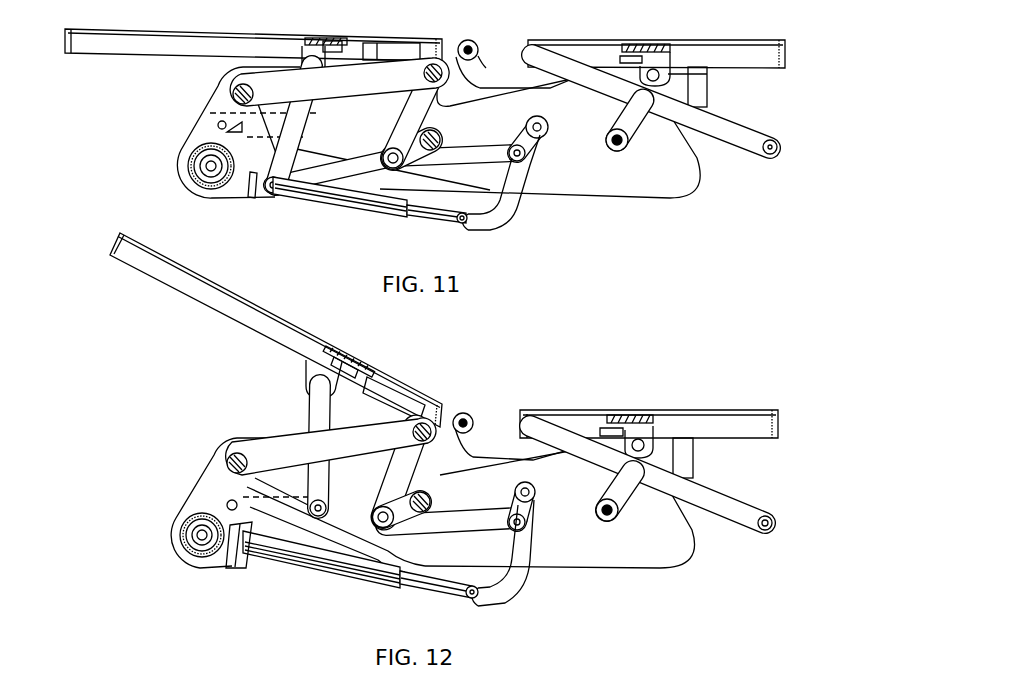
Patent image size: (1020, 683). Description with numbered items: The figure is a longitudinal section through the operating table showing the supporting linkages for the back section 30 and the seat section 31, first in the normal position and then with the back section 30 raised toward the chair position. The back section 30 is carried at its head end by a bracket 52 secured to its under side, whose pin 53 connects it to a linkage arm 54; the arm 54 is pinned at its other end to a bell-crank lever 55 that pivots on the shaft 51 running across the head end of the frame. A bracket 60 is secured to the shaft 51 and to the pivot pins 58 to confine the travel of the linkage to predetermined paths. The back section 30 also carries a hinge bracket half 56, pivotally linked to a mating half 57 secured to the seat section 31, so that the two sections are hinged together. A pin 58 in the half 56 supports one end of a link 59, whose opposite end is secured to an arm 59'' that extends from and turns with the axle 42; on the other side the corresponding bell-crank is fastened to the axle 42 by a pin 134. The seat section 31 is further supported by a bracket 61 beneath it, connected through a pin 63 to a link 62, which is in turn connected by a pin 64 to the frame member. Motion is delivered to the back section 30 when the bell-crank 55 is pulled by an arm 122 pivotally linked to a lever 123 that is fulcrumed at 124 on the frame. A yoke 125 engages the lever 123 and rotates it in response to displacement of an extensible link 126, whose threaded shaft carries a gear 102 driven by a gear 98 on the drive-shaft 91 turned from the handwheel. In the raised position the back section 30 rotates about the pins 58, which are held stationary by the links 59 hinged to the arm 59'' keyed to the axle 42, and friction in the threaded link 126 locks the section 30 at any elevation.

In FIG. 11, the back section 30 is at (165, 37).
In FIG. 12, the back section 30 is at (218, 291).
In FIG. 11, the seat section 31 is at (733, 52).
In FIG. 12, the seat section 31 is at (602, 413).
In FIG. 11, the shaft 42 is at (441, 140).
In FIG. 12, the shaft 42 is at (432, 502).
In FIG. 11, the shaft 51 is at (232, 94).
In FIG. 12, the shaft 51 is at (226, 461).
In FIG. 11, the bracket 52 is at (302, 44).
In FIG. 12, the bracket 52 is at (305, 379).
In FIG. 11, the pin 53 is at (318, 41).
In FIG. 11, the linkage arm 54 is at (308, 109).
In FIG. 12, the linkage arm 54 is at (318, 416).
In FIG. 11, the bell-crank lever 55 is at (225, 115).
In FIG. 12, the bell-crank lever 55 is at (225, 490).
In FIG. 11, the hinge bracket half 56 is at (462, 44).
In FIG. 12, the hinge bracket half 56 is at (457, 422).
In FIG. 11, the hinge bracket half 57 is at (492, 73).
In FIG. 12, the hinge bracket half 57 is at (484, 446).
In FIG. 11, the pin 58 is at (437, 62).
In FIG. 12, the pin 58 is at (410, 427).
In FIG. 11, the link 59 is at (399, 120).
In FIG. 12, the link 59 is at (418, 472).
In FIG. 11, the arm 59'' is at (435, 162).
In FIG. 12, the arm 59'' is at (381, 503).
In FIG. 11, the bracket 60 is at (374, 76).
In FIG. 12, the bracket 60 is at (281, 455).
In FIG. 11, the bracket 61 is at (666, 56).
In FIG. 12, the bracket 61 is at (651, 428).
In FIG. 11, the link 62 is at (631, 122).
In FIG. 12, the link 62 is at (620, 500).
In FIG. 11, the pin 63 is at (698, 82).
In FIG. 11, the pin 64 is at (620, 150).
In FIG. 11, the drive-shaft 91 is at (204, 172).
In FIG. 11, the gear 98 is at (213, 181).
In FIG. 12, the gear 98 is at (196, 558).
In FIG. 11, the gear 102 is at (226, 198).
In FIG. 12, the gear 102 is at (210, 568).
In FIG. 11, the arm 122 is at (335, 148).
In FIG. 12, the arm 122 is at (278, 511).
In FIG. 11, the lever 123 is at (505, 221).
In FIG. 12, the lever 123 is at (514, 583).
In FIG. 11, the fulcrum 124 is at (540, 137).
In FIG. 12, the fulcrum 124 is at (531, 505).
In FIG. 11, the yoke 125 is at (461, 226).
In FIG. 12, the yoke 125 is at (440, 592).
In FIG. 11, the extensible link 126 is at (312, 196).
In FIG. 12, the extensible link 126 is at (300, 571).
In FIG. 12, the pin 134 is at (428, 507).